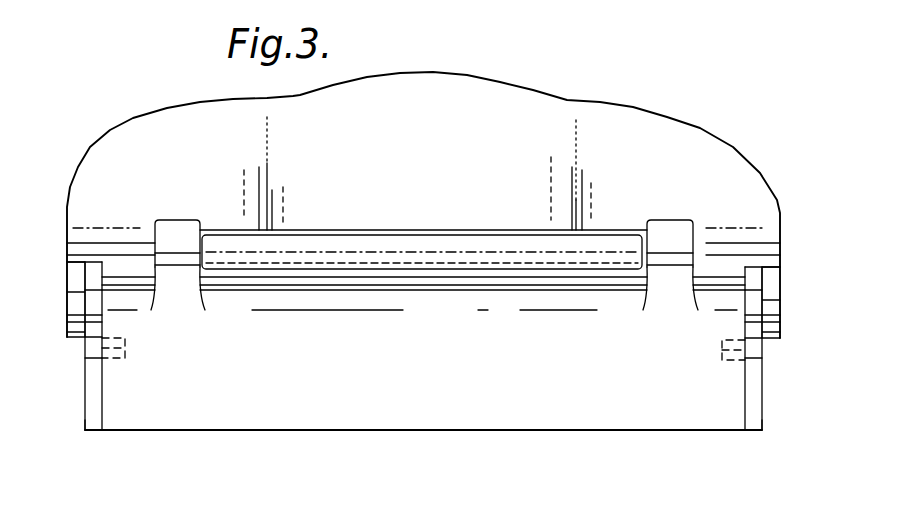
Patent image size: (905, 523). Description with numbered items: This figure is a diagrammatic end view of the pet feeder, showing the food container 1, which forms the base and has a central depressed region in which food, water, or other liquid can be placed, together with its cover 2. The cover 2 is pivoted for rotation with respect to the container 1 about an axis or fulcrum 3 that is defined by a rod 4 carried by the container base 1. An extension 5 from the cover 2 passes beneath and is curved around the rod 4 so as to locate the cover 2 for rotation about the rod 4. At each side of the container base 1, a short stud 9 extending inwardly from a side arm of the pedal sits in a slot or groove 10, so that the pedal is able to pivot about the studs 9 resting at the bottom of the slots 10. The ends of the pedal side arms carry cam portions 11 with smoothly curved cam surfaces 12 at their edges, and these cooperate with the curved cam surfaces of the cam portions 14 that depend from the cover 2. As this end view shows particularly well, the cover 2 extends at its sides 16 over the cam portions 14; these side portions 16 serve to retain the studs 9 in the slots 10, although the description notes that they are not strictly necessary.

The food container 1 is at (333, 407).
The cover 2 is at (463, 97).
The axis or fulcrum 3 is at (377, 250).
The rod 4 is at (620, 230).
The extension 5 is at (465, 247).
The short studs 9 is at (110, 358).
The slots or grooves 10 is at (125, 358).
The cam portions 11 is at (85, 377).
The cam surfaces 12 is at (93, 410).
The cam portions 14 is at (92, 293).
The sides 16 is at (72, 317).